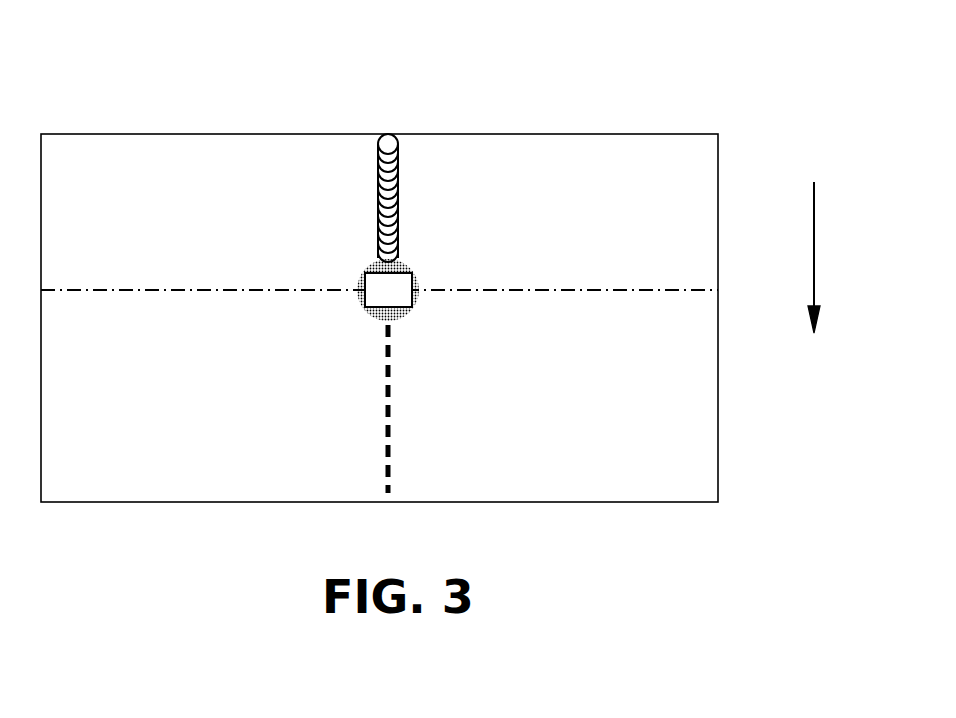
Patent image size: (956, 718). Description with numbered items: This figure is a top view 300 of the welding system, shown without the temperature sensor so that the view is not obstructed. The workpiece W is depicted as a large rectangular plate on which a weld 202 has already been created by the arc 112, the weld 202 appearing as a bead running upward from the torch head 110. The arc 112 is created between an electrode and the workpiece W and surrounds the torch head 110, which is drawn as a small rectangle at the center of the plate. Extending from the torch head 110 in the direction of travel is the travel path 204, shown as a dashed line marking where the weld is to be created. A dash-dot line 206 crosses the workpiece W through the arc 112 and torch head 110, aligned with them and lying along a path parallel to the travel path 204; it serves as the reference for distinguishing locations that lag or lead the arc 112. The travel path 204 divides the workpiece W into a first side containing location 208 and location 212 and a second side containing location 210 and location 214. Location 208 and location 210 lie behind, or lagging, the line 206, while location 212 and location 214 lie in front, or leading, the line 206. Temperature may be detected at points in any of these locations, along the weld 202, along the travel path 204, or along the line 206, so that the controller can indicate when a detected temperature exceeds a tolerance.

The friction stir welding system / process view 300 is at (630, 60).
The workpiece W is at (379, 318).
The weld 202 is at (398, 172).
The travel path 204 is at (386, 436).
The reference numeral 206 (alignment line) 206 is at (145, 290).
The location 208 is at (214, 218).
The location 210 is at (587, 218).
The location 212 is at (214, 397).
The location 214 is at (580, 391).
The torch head 110 is at (408, 305).
The arc 112 is at (402, 263).